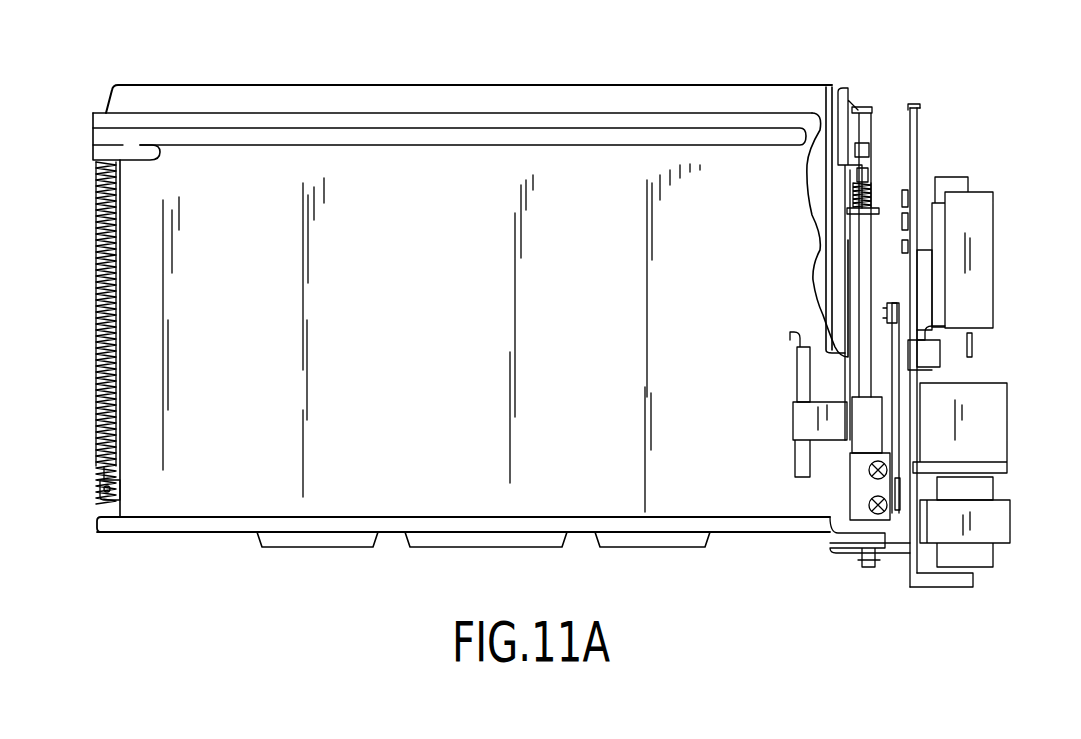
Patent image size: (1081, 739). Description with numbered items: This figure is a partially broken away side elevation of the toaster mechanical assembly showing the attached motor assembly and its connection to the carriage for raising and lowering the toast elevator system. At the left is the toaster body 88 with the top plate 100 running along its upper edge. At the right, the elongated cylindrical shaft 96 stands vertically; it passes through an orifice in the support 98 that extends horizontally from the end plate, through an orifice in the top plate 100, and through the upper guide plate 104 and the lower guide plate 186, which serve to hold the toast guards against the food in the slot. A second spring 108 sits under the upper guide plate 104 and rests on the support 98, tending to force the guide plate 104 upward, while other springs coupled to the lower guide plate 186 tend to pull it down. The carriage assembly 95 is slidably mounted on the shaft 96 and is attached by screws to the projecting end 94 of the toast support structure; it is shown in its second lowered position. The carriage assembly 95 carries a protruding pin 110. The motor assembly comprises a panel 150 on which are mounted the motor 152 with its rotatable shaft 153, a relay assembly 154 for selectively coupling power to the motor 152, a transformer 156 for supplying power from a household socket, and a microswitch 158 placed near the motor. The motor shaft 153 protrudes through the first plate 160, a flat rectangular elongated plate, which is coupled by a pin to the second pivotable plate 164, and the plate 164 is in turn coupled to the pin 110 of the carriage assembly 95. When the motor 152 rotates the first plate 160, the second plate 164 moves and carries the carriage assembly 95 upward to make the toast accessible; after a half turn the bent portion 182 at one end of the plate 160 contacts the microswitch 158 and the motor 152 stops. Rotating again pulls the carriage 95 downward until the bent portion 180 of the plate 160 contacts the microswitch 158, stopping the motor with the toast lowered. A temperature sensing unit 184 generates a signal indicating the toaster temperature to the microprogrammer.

The tray panel 88 is at (197, 497).
The top plate 100 is at (167, 100).
The elongated cylindrical shaft 96 is at (857, 283).
The upper guide plate 104 is at (870, 175).
The second spring 108 is at (855, 197).
The support 98 is at (876, 215).
The carriage assembly 95 is at (858, 437).
The projecting end 94 is at (865, 492).
The temperature sensing unit 184 is at (795, 420).
The second pivotable plate 164 is at (888, 353).
The lower guide plate 186 is at (905, 303).
The protruding pin 110 is at (901, 492).
The first plate 160 is at (917, 154).
The bent portion 182 is at (918, 106).
The panel 150 is at (918, 586).
The motor 152 is at (994, 258).
The rotatable shaft 153 is at (923, 228).
The bent portion 180 is at (932, 332).
The microswitch 158 is at (926, 368).
The relay assembly 154 is at (1007, 458).
The transformer 156 is at (1012, 524).